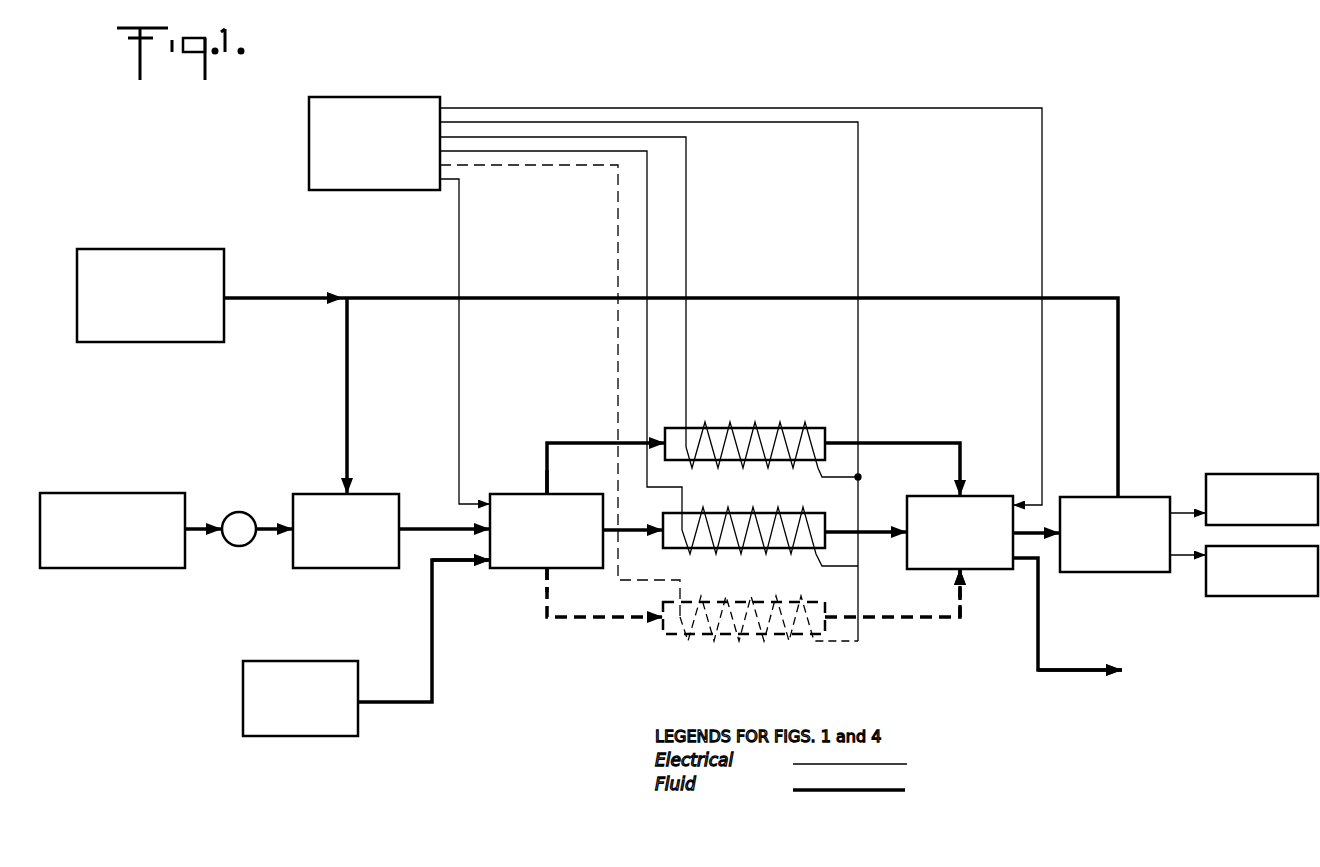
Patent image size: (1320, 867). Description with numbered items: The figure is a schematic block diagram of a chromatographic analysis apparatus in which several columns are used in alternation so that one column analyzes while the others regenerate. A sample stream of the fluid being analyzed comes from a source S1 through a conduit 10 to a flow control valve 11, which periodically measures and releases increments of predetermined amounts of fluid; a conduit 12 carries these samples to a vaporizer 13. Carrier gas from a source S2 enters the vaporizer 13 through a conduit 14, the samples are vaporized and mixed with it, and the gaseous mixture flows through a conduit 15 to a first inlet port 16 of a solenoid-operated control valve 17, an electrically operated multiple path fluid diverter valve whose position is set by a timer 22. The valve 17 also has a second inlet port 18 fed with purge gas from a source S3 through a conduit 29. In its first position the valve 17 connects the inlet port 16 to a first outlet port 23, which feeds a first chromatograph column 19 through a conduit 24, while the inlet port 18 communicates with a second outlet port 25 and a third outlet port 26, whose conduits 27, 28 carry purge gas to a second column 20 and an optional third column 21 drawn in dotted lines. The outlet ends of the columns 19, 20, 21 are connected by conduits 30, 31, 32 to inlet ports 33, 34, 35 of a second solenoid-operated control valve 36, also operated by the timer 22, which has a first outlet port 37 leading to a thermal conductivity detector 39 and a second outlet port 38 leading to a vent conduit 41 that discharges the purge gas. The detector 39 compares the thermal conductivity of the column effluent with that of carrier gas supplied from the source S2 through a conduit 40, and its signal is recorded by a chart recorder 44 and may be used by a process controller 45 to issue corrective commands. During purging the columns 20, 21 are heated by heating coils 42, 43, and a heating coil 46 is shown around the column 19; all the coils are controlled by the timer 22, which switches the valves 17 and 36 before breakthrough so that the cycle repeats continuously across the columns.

The source of sample stream S1 is at (126, 493).
The carrier gas source S2 is at (170, 250).
The purge gas source S3 is at (316, 661).
The conduit 10 is at (198, 527).
The flow control valve 11 is at (251, 512).
The conduit 12 is at (276, 527).
The vaporizer 13 is at (374, 497).
The conduit 14 is at (345, 355).
The conduit 15 is at (418, 527).
The first inlet port 16 is at (476, 542).
The solenoid-operated control valve 17 is at (510, 494).
The second inlet port 18 is at (482, 566).
The first chromatograph column 19 is at (750, 428).
The second chromatograph column 20 is at (775, 515).
The third chromatograph column 21 is at (770, 602).
The timer 22 is at (372, 97).
The first outlet port 23 is at (548, 494).
The conduit 24 is at (560, 443).
The second outlet port 25 is at (612, 536).
The third outlet port 26 is at (554, 570).
The conduit 27 is at (632, 529).
The conduit 28 is at (606, 619).
The conduit 29 is at (434, 657).
The conduit 30 is at (903, 443).
The conduit 31 is at (870, 530).
The conduit 32 is at (902, 617).
The inlet port 33 is at (968, 492).
The inlet port 34 is at (895, 540).
The inlet port 35 is at (964, 585).
The solenoid-operated control valve 36 is at (1000, 496).
The first outlet port 37 is at (1028, 534).
The second outlet port 38 is at (1020, 562).
The thermal conductivity detector 39 is at (1155, 497).
The conduit 40 is at (520, 298).
The vent conduit 41 is at (1082, 674).
The heating coil 42 is at (712, 516).
The heating coil 43 is at (715, 602).
The chart recorder 44 is at (1296, 596).
The process controller 45 is at (1276, 474).
The heating coil 46 is at (705, 428).